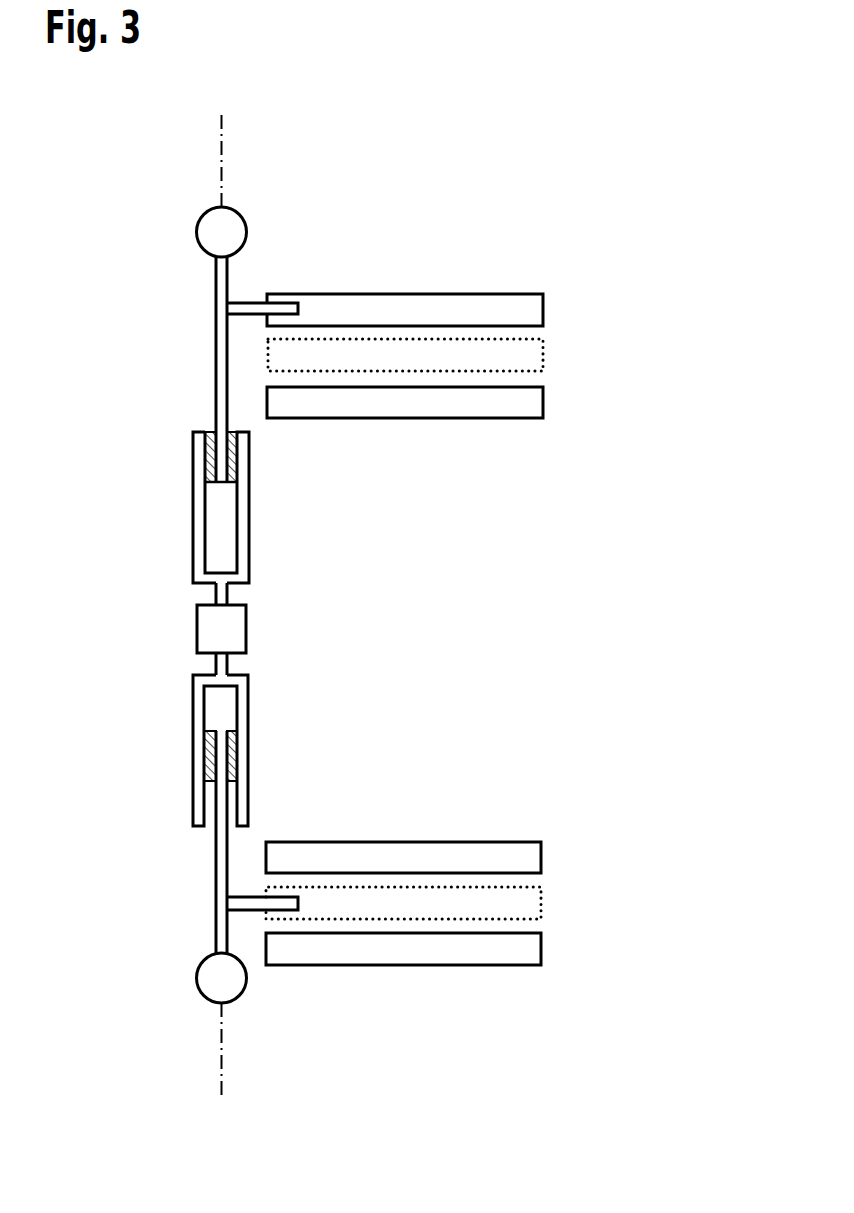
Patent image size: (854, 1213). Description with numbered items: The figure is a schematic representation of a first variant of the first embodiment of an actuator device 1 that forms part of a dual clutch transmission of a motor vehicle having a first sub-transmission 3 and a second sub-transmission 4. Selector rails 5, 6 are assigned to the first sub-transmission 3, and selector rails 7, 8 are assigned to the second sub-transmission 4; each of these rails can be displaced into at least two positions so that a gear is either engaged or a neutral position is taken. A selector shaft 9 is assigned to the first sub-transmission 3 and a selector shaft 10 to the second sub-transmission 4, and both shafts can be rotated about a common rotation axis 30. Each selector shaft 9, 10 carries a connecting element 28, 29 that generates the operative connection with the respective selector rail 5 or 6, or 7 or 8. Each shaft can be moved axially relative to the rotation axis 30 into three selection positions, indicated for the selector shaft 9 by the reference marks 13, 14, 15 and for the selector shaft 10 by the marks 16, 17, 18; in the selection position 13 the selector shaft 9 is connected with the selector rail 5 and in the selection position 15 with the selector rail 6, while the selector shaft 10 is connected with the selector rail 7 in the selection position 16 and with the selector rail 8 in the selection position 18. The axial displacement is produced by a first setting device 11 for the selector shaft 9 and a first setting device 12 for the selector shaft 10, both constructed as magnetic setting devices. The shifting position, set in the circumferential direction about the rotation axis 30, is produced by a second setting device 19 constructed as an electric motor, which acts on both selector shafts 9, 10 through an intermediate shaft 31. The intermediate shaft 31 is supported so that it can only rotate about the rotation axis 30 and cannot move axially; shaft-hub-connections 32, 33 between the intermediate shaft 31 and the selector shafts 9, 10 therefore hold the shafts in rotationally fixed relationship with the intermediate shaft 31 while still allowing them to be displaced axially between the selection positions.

The actuator device 1 is at (595, 198).
The first sub-transmission 3 is at (650, 354).
The second sub-transmission 4 is at (650, 905).
The selector rail 5 is at (435, 266).
The selector rail 6 is at (435, 443).
The selector rail 7 is at (434, 814).
The selector rail 8 is at (434, 991).
The selector shaft 9 is at (221, 362).
The selector shaft 10 is at (222, 870).
The first setting device 11 is at (215, 235).
The first setting device 12 is at (213, 978).
The selection position 13 is at (603, 324).
The selection position 14 is at (603, 370).
The selection position 15 is at (603, 415).
The selection position 16 is at (603, 872).
The selection position 17 is at (603, 918).
The selection position 18 is at (603, 962).
The second setting device 19 is at (205, 628).
The connecting element 28 is at (263, 308).
The connecting element 29 is at (249, 903).
The rotation axis 30 is at (220, 1048).
The intermediate shaft 31 is at (205, 681).
The shaft-hub-connection 32 is at (280, 472).
The shaft-hub-connection 33 is at (242, 743).